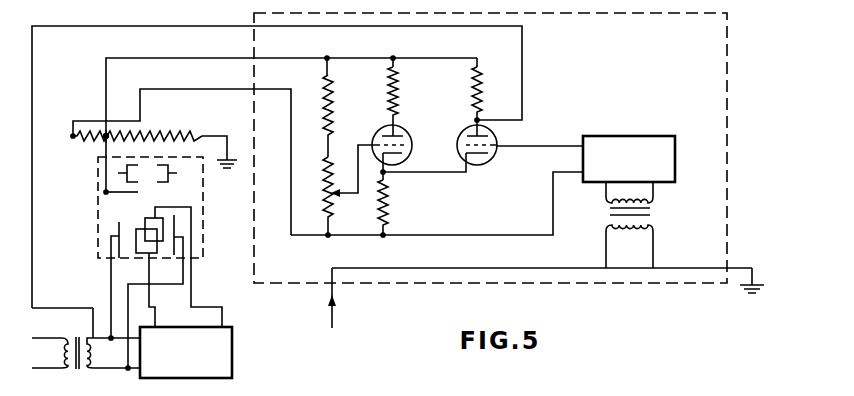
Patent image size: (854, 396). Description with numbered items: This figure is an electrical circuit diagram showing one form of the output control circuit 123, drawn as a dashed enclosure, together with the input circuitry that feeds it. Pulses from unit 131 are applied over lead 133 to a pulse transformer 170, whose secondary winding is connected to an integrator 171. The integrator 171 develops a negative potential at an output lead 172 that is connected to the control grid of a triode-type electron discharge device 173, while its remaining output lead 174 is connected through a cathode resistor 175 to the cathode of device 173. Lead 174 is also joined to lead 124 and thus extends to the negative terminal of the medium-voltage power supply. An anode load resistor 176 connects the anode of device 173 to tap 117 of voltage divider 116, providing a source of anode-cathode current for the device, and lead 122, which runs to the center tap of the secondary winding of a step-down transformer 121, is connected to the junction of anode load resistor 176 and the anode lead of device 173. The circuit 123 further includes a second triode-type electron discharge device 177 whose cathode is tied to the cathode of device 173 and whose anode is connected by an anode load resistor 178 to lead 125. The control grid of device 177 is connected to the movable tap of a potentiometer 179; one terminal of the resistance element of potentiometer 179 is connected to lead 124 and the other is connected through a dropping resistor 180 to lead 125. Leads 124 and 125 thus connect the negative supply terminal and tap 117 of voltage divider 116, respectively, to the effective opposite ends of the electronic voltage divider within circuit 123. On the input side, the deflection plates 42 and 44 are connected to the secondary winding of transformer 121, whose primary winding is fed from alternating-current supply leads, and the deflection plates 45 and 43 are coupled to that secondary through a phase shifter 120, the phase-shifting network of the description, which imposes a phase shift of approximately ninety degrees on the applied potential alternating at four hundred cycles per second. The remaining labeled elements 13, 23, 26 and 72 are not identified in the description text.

The ground 13 is at (757, 283).
The relay armature connection 23 is at (157, 191).
The relay contacts 26 is at (169, 184).
The deflection plate 42 is at (119, 225).
The deflection plate 43 is at (152, 218).
The deflection plate 44 is at (184, 237).
The deflection plate 45 is at (151, 255).
The potentiometer wiper 72 is at (107, 141).
The voltage divider 116 is at (168, 132).
The tap 117 is at (107, 134).
The phase shifter 120 is at (232, 364).
The step-down transformer 121 is at (73, 334).
The lead 122 is at (33, 268).
The output control circuit 123 is at (728, 88).
The lead 124 is at (199, 89).
The lead 125 is at (106, 104).
The unit 131 is at (373, 298).
The lead 133 is at (466, 268).
The pulse transformer 170 is at (655, 212).
The integrator 171 is at (644, 135).
The output lead 172 is at (558, 146).
The triode-type electron discharge device 173 is at (461, 136).
The output lead 174 is at (520, 235).
The cathode resistor 175 is at (387, 215).
The anode load resistor 176 is at (480, 106).
The electron discharge device 177 is at (376, 132).
The anode load resistor 178 is at (398, 106).
The potentiometer 179 is at (327, 170).
The dropping resistor 180 is at (333, 112).